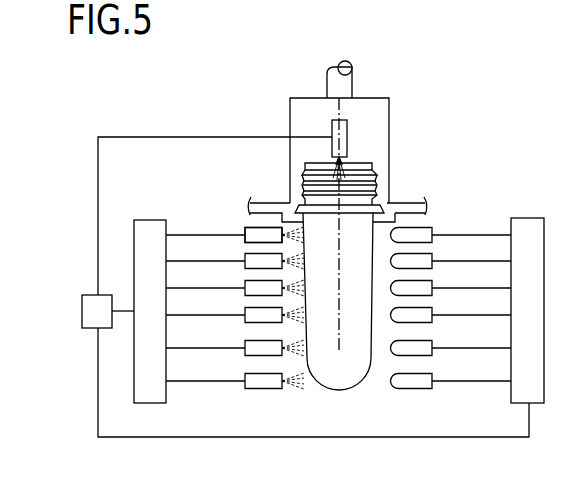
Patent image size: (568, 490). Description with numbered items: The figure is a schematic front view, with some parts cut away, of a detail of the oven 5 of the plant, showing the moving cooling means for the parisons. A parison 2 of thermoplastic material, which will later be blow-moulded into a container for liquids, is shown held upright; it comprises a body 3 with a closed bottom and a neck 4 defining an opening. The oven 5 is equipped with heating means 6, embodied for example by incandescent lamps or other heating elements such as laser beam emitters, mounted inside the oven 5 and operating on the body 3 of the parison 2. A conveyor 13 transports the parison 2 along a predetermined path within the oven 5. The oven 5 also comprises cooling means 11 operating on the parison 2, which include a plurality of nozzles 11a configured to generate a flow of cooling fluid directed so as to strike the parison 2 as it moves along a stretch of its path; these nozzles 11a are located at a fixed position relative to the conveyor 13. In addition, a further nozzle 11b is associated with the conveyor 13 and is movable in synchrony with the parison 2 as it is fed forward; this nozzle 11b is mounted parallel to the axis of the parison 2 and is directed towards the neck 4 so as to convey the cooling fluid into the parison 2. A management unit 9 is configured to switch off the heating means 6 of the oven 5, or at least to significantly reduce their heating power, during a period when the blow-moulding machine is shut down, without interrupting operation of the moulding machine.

The parison 2 is at (336, 392).
The body 3 is at (354, 365).
The neck 4 is at (364, 192).
The oven 5 is at (270, 197).
The heating means 6 is at (427, 395).
The management unit 9 is at (91, 322).
The cooling means 11 is at (255, 392).
The nozzle 11a is at (248, 230).
The nozzle 11b is at (332, 127).
The conveyor 13 is at (364, 88).